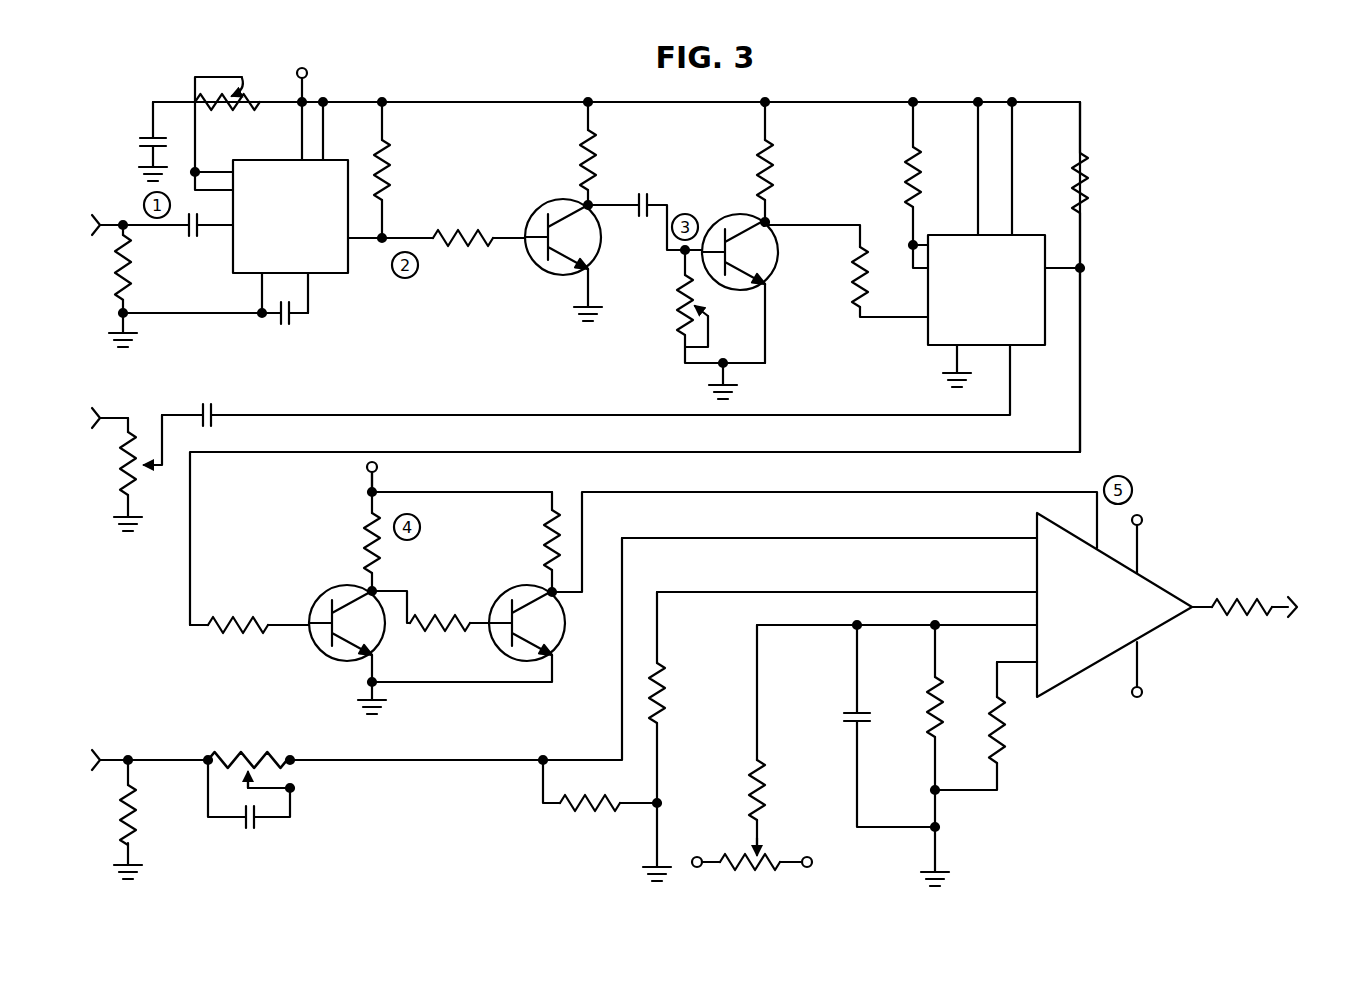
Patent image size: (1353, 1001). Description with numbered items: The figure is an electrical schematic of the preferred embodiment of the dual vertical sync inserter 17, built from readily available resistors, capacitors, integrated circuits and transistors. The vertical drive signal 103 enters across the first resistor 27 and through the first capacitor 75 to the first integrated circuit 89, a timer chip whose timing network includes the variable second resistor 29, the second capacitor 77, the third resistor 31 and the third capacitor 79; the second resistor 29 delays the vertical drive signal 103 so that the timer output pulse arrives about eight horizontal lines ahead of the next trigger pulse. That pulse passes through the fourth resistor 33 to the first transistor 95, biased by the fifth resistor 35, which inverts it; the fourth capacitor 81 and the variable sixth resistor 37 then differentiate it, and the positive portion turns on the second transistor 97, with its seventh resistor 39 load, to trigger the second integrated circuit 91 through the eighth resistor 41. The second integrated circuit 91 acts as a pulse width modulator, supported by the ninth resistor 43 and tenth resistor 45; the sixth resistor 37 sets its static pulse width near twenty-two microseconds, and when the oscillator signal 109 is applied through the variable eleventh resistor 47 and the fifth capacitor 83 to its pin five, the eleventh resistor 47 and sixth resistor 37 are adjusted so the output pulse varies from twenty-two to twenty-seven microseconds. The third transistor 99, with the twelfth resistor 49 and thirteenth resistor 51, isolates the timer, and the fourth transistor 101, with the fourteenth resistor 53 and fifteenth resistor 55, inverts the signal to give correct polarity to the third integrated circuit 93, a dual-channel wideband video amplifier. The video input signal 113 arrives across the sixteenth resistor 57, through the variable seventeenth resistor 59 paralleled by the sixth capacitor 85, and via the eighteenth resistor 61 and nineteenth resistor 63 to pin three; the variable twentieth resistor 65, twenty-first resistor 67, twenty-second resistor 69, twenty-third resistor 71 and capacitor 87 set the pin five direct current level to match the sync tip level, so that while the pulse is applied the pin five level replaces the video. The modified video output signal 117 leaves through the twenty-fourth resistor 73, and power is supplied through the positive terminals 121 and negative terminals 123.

The dual vertical sync inserter 17 is at (1168, 82).
The first resistor 27 is at (140, 268).
The second resistor 29 is at (246, 88).
The third resistor 31 is at (392, 182).
The fourth resistor 33 is at (443, 224).
The fifth resistor 35 is at (600, 154).
The sixth resistor 37 is at (675, 318).
The seventh resistor 39 is at (758, 166).
The eighth resistor 41 is at (848, 276).
The ninth resistor 43 is at (920, 170).
The tenth resistor 45 is at (1090, 180).
The eleventh resistor 47 is at (112, 460).
The twelfth resistor 49 is at (255, 608).
The thirteenth resistor 51 is at (362, 537).
The fourteenth resistor 53 is at (445, 637).
The fifteenth resistor 55 is at (540, 540).
The sixteenth resistor 57 is at (148, 820).
The seventeenth resistor 59 is at (258, 745).
The eighteenth resistor 61 is at (578, 820).
The nineteenth resistor 63 is at (668, 686).
The twentieth resistor 65 is at (735, 848).
The twenty-first resistor 67 is at (765, 782).
The twenty-second resistor 69 is at (945, 712).
The twenty-third resistor 71 is at (1005, 740).
The twenty-fourth resistor 73 is at (1224, 598).
The first capacitor 75 is at (197, 237).
The second capacitor 77 is at (150, 133).
The third capacitor 79 is at (292, 320).
The fourth capacitor 81 is at (652, 193).
The fifth capacitor 83 is at (210, 403).
The sixth capacitor 85 is at (252, 835).
The capacitor 87 is at (875, 718).
The first integrated circuit 89 is at (347, 272).
The second integrated circuit 91 is at (926, 336).
The third integrated circuit 93 is at (1060, 683).
The first transistor 95 is at (552, 276).
The second transistor 97 is at (736, 212).
The third transistor 99 is at (328, 656).
The fourth transistor 101 is at (505, 590).
The vertical drive signal 103 is at (98, 222).
The oscillator signal 109 is at (100, 418).
The video input signal 113 is at (100, 760).
The modified video output signal 117 is at (1300, 598).
The positive terminals 121 is at (307, 70).
The negative terminals 123 is at (1143, 691).